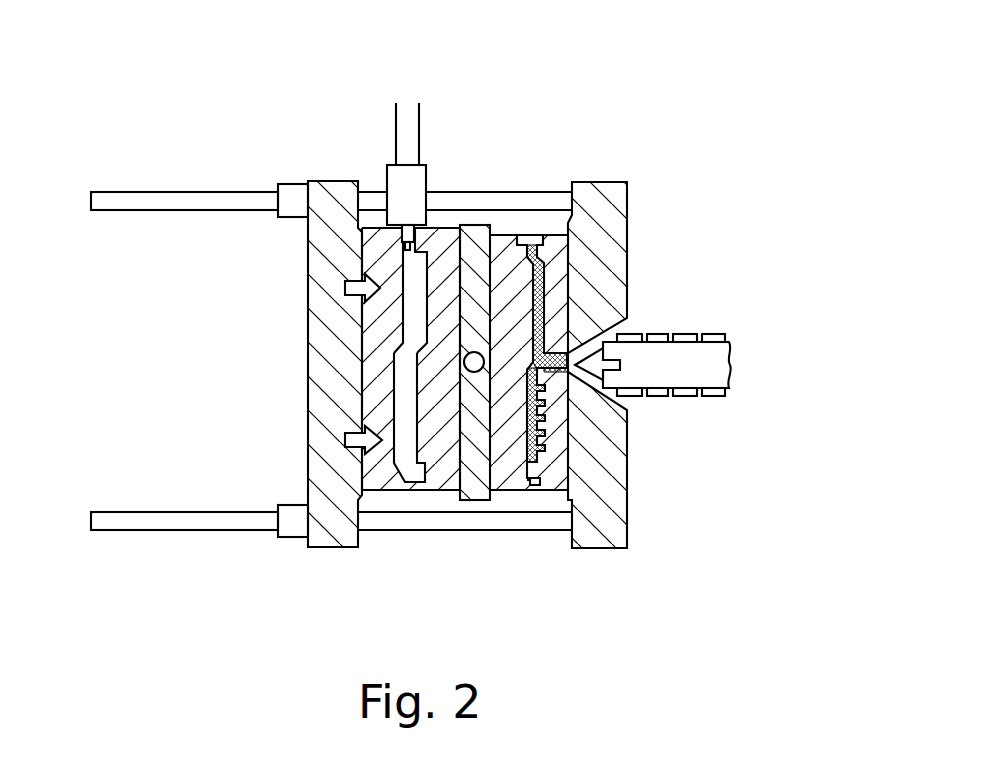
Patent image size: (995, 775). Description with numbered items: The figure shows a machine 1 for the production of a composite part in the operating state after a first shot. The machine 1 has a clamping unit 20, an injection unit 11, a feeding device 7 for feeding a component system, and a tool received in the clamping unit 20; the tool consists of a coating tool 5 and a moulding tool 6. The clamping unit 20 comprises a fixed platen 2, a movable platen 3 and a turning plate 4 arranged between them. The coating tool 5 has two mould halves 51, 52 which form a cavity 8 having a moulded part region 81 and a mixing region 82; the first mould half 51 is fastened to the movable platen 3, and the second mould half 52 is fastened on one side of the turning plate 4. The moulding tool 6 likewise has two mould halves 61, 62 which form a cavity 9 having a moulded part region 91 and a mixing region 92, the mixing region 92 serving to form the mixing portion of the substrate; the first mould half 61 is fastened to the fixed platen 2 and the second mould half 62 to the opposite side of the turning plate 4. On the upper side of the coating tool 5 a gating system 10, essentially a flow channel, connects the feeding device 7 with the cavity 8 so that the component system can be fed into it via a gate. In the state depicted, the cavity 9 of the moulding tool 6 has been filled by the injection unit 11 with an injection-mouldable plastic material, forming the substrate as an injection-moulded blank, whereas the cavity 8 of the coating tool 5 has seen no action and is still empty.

The machine 1 is at (641, 126).
The fixed platen 2 is at (612, 208).
The movable platen 3 is at (323, 437).
The turning plate 4 is at (477, 480).
The coating tool 5 is at (403, 544).
The first mould half 51 is at (378, 482).
The second mould half 52 is at (447, 477).
The moulding tool 6 is at (542, 544).
The first mould half 61 is at (555, 475).
The second mould half 62 is at (510, 477).
The feeding device 7 is at (405, 148).
The cavity 8 is at (430, 260).
The moulded part region 81 is at (388, 377).
The mixing region 82 is at (396, 310).
The cavity 9 is at (530, 316).
The moulded part region 91 is at (552, 287).
The mixing region 92 is at (556, 430).
The gating system 10 is at (394, 250).
The injection unit 11 is at (740, 335).
The clamping unit 20 is at (544, 154).